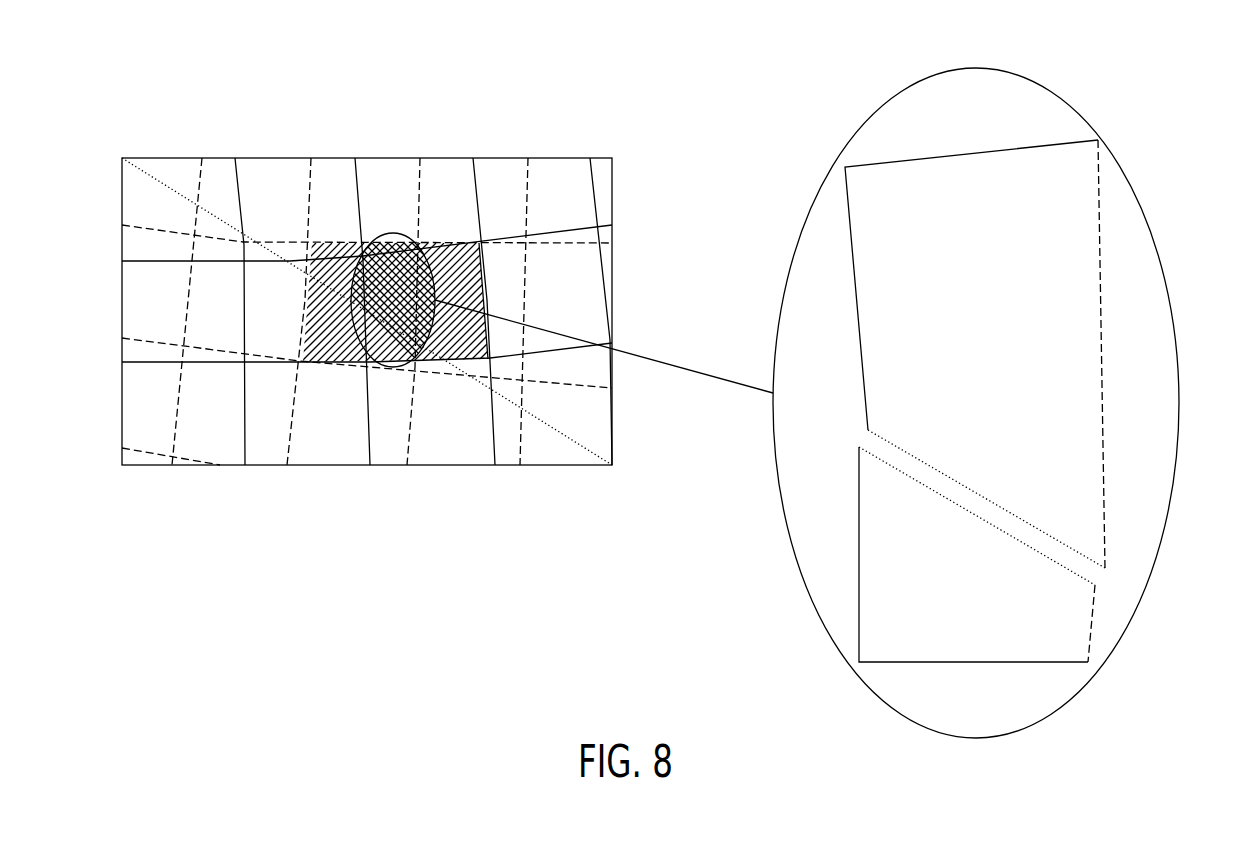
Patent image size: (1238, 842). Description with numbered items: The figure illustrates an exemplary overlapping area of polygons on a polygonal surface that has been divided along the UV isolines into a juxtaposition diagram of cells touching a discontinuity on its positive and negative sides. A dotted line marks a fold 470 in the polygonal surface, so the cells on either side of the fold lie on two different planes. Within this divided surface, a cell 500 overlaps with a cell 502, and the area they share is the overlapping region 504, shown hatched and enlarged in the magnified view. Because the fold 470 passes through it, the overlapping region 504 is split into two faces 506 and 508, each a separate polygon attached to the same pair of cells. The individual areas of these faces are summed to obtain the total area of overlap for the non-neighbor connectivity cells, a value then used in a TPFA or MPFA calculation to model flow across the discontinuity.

The fold 470 is at (142, 170).
The cell 500 is at (308, 297).
The cell 502 is at (487, 300).
The overlapping region 504 is at (393, 367).
The face 506 is at (1103, 348).
The face 508 is at (1092, 630).